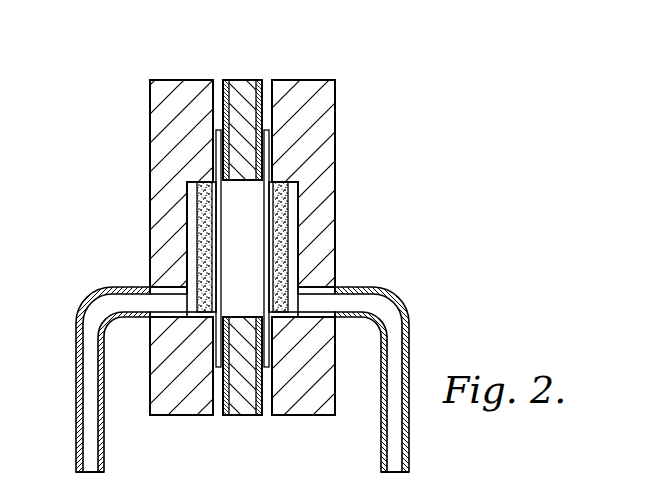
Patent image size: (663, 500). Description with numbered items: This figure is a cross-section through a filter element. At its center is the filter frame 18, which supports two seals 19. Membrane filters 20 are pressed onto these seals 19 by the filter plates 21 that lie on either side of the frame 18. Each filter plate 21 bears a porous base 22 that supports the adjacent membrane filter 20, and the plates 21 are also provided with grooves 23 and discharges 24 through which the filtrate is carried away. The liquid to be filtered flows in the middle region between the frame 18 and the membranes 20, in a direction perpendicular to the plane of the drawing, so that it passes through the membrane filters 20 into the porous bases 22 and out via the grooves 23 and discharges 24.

The filter frame 18 is at (246, 83).
The seal 19 is at (226, 80).
The membrane filter 20 is at (228, 207).
The filter plate 21 is at (151, 108).
The porous base 22 is at (196, 200).
The groove 23 is at (193, 246).
The discharge 24 is at (106, 463).